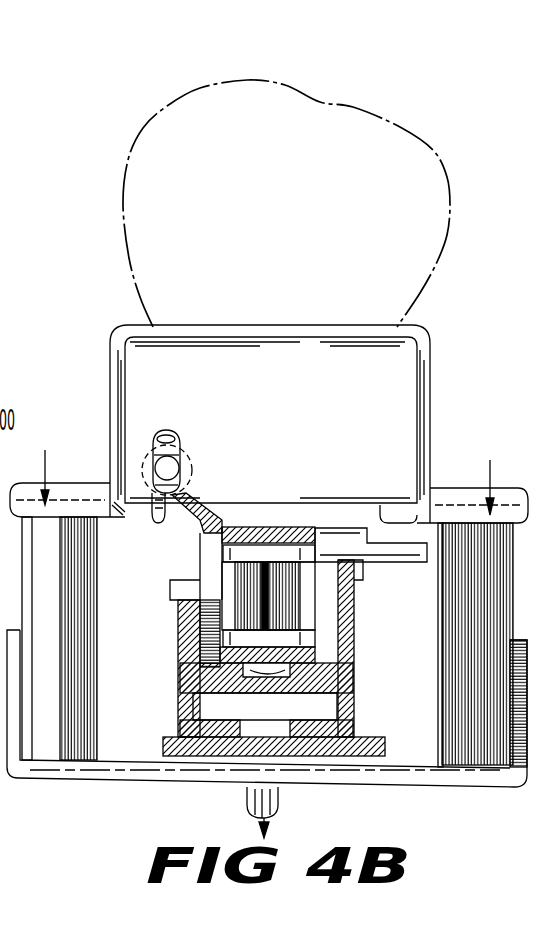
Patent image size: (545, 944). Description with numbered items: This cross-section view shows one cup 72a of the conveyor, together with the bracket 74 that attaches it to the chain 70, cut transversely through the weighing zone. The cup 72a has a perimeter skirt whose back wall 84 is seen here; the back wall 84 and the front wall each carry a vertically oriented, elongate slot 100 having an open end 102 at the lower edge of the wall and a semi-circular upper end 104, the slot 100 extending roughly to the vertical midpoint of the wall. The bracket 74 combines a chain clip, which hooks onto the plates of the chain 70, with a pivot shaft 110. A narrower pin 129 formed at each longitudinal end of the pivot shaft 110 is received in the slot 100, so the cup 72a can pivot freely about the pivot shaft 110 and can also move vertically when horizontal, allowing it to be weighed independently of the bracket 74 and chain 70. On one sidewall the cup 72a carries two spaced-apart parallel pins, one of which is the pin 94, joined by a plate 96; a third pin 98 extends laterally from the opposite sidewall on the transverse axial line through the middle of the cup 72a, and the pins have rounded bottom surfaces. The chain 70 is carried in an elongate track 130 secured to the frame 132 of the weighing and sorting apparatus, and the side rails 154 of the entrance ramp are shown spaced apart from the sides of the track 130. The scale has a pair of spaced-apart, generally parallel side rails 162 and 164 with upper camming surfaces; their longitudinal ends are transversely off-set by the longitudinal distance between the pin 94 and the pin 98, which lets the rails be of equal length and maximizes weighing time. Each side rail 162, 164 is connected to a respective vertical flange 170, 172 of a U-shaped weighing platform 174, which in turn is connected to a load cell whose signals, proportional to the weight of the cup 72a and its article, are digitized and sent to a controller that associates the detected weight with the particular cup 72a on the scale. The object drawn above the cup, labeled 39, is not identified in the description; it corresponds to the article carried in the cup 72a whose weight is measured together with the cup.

The tooth 39 is at (433, 172).
The cup 72a is at (416, 330).
The back wall 84 is at (282, 418).
The plate 96 is at (65, 485).
The third pin 98 is at (497, 505).
The pin 94 is at (30, 543).
The slot 100 is at (160, 430).
The upper end 104 is at (175, 440).
The pin 129 is at (172, 465).
The pivot shaft 110 is at (190, 470).
The open end 102 is at (153, 510).
The bracket 74 is at (190, 530).
The chain 70 is at (298, 613).
The track 130 is at (182, 695).
The frame 132 is at (363, 743).
The side rails 154 is at (87, 652).
The side rail 162 is at (50, 622).
The side rail 164 is at (477, 625).
The vertical flange 170 is at (0, 758).
The vertical flange 172 is at (527, 773).
The weighing platform 174 is at (303, 773).